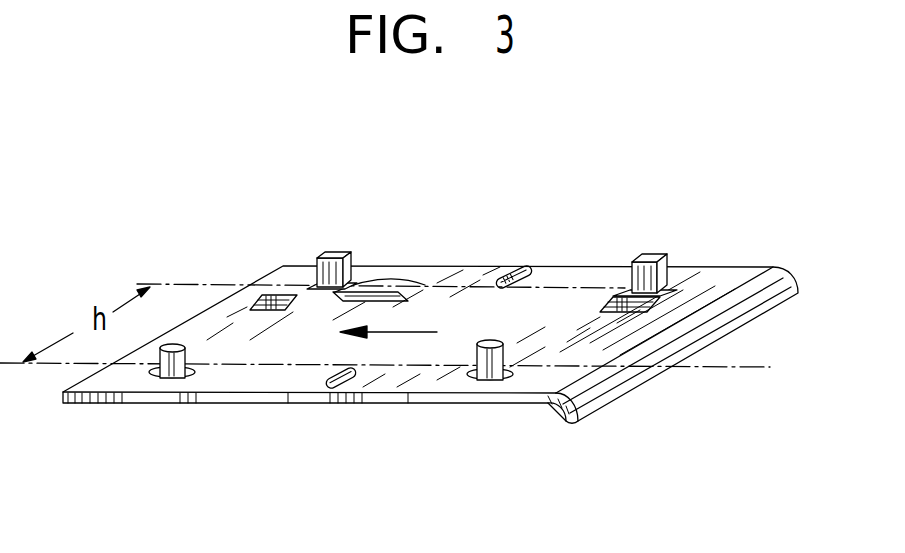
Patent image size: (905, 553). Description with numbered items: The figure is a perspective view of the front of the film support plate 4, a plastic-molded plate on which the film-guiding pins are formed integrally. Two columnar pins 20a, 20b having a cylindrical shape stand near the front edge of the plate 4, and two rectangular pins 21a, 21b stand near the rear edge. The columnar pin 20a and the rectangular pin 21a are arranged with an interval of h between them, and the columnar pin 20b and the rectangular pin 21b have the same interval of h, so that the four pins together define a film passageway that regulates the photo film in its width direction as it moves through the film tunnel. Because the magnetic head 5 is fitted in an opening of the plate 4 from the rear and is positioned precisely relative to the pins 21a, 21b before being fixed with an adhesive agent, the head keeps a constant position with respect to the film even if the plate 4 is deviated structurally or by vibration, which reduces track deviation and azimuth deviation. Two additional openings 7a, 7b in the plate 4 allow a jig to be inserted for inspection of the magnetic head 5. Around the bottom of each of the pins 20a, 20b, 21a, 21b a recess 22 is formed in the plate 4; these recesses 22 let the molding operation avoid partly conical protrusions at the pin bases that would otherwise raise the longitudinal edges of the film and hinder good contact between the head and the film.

The film support plate 4 is at (620, 400).
The magnetic head 5 is at (405, 280).
The opening 7a is at (658, 306).
The opening 7b is at (288, 306).
The columnar pin 20a is at (484, 380).
The columnar pin 20b is at (173, 382).
The rectangular pin 21a is at (653, 253).
The rectangular pin 21b is at (335, 250).
The recess 22 is at (352, 280).